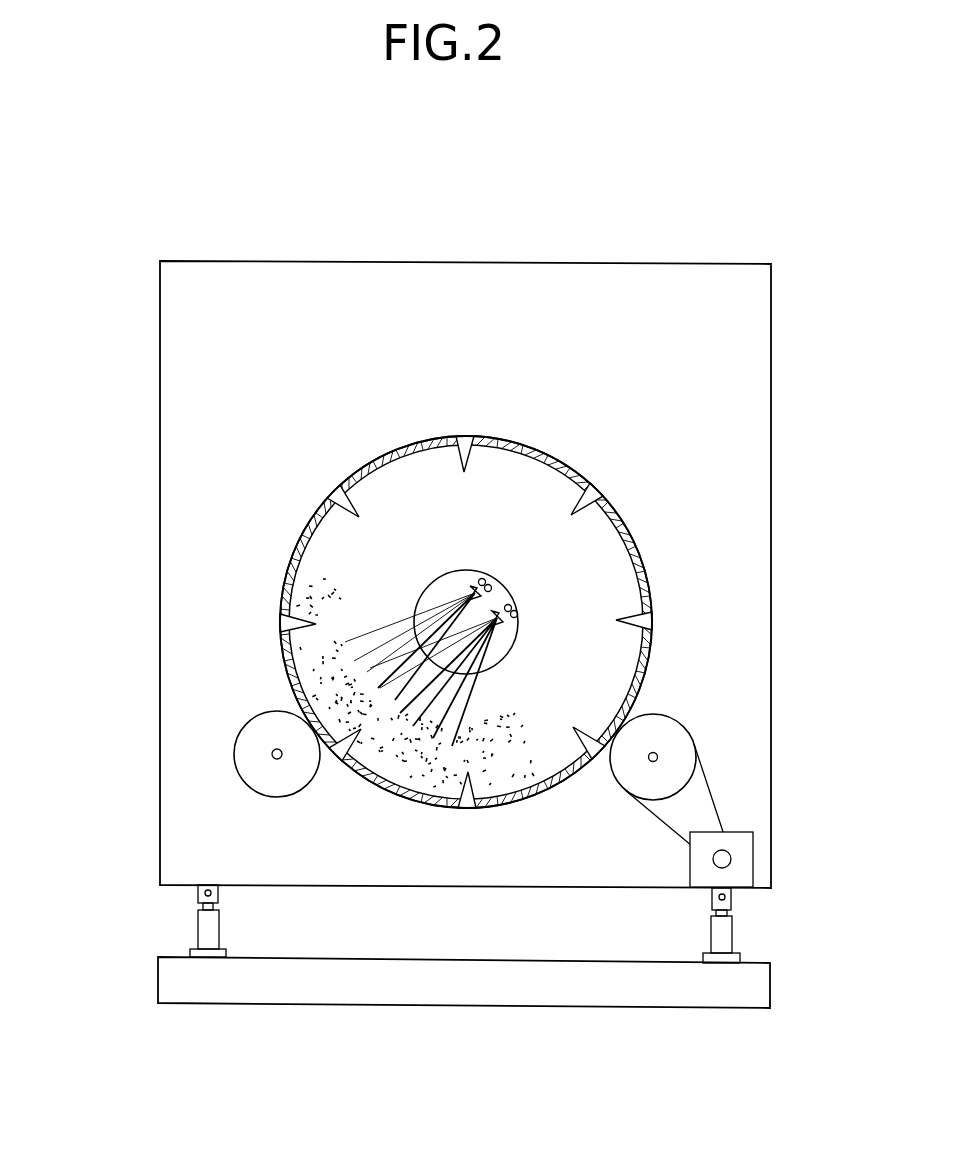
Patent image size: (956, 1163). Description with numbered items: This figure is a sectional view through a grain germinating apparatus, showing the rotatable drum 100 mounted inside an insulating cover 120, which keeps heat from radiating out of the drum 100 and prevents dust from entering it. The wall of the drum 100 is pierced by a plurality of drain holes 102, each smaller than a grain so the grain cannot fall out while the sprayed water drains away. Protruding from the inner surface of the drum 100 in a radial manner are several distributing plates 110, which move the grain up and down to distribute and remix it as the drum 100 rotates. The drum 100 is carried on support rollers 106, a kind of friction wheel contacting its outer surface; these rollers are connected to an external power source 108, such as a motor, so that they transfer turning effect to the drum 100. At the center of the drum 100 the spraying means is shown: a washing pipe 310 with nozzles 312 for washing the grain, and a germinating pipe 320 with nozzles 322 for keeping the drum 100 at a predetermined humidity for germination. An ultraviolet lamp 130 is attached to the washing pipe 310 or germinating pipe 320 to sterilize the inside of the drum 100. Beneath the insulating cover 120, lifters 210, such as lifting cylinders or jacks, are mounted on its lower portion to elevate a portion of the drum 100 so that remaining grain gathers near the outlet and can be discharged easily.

The drum 100 is at (497, 568).
The drain holes 102 is at (540, 450).
The support rollers 106 is at (682, 738).
The external power source 108 is at (745, 862).
The distributing plates 110 is at (623, 618).
The insulating cover 120 is at (172, 442).
The ultraviolet lamp 130 is at (479, 614).
The lifter 210 is at (202, 927).
The washing pipe 310 is at (516, 601).
The nozzles 312 is at (506, 623).
The germinating pipe 320 is at (490, 580).
The nozzles 322 is at (464, 590).